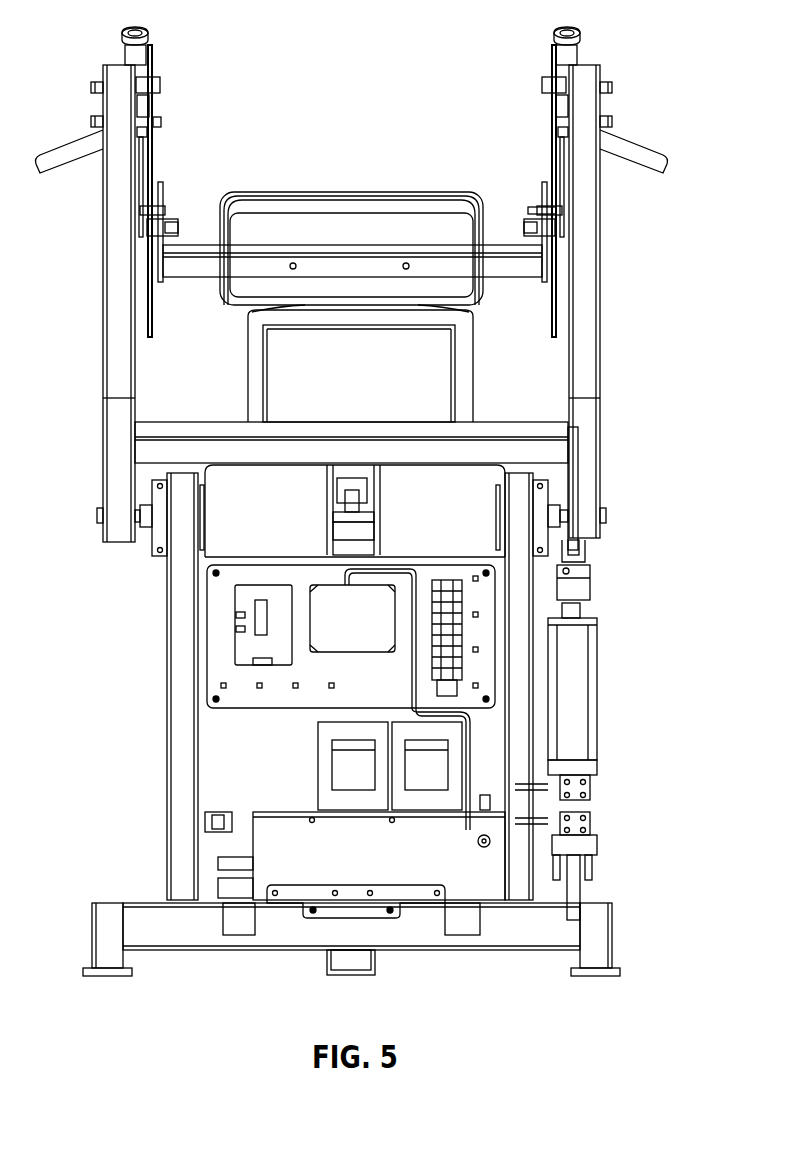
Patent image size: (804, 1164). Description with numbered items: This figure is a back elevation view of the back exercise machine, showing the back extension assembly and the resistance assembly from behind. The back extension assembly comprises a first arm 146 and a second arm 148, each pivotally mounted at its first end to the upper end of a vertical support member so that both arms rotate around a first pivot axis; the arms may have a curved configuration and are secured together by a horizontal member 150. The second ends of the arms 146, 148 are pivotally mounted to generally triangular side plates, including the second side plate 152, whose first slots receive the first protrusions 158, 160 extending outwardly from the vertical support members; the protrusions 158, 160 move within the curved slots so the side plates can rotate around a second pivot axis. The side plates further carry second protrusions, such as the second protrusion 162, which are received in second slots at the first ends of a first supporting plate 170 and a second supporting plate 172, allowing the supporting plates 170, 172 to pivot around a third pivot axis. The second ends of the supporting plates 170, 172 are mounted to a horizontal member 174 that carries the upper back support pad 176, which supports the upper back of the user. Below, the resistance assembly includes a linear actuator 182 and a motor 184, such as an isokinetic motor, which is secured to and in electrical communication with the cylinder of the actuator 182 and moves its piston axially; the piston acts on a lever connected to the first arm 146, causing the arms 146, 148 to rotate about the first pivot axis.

The first arm 146 is at (586, 276).
The second arm 148 is at (117, 276).
The horizontal member / first side plate 150 is at (553, 158).
The second side plate 152 is at (153, 160).
The first protrusion 158 is at (143, 212).
The first protrusion 160 is at (162, 124).
The second protrusion 162 is at (562, 212).
The first supporting plate 170 is at (165, 184).
The second supporting plate 172 is at (540, 190).
The horizontal member 174 is at (421, 266).
The upper back support pad 176 is at (331, 228).
The linear actuator 182 is at (572, 708).
The motor 184 is at (268, 757).